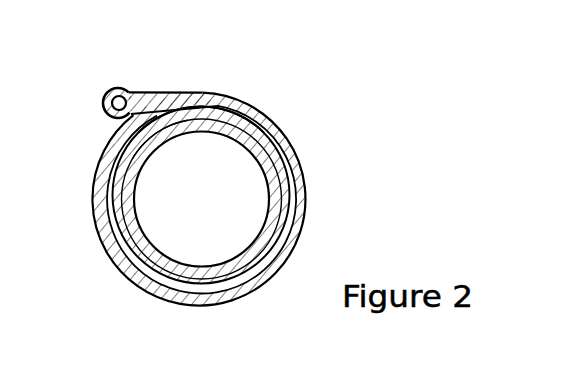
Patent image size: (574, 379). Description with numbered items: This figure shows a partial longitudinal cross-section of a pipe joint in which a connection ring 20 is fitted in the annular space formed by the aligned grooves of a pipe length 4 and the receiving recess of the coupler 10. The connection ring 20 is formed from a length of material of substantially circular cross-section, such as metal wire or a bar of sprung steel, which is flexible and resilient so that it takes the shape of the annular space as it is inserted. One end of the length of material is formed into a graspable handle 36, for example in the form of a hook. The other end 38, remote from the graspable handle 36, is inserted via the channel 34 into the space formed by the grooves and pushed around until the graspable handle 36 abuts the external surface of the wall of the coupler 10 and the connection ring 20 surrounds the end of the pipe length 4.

The pipe length 4 is at (251, 266).
The coupler 10 is at (206, 208).
The connection ring 20 is at (297, 152).
The channel 34 is at (188, 127).
The graspable handle 36 is at (105, 111).
The end 38 is at (156, 133).